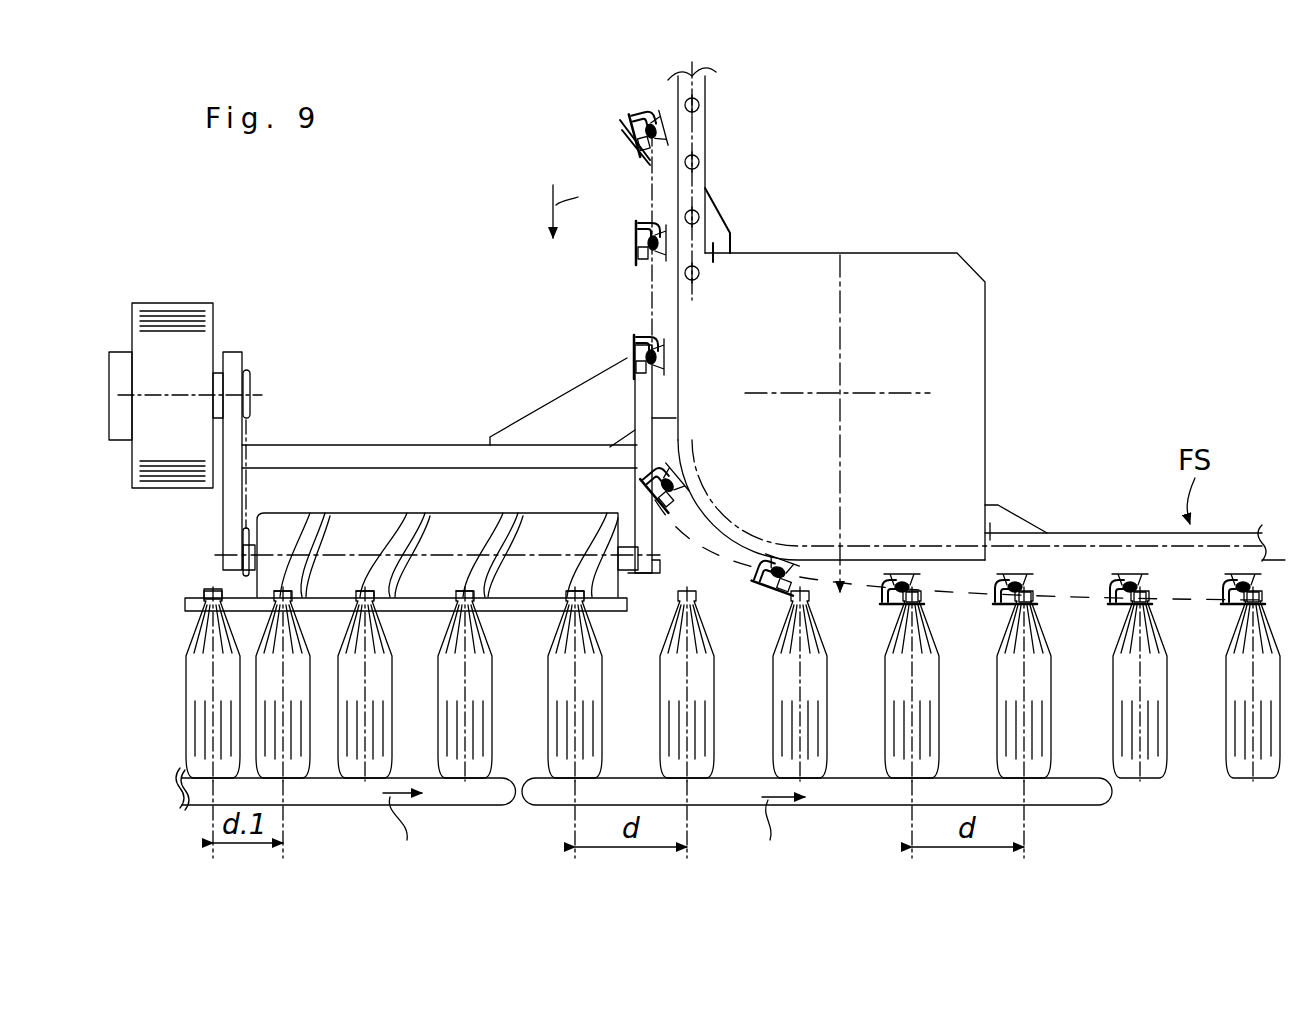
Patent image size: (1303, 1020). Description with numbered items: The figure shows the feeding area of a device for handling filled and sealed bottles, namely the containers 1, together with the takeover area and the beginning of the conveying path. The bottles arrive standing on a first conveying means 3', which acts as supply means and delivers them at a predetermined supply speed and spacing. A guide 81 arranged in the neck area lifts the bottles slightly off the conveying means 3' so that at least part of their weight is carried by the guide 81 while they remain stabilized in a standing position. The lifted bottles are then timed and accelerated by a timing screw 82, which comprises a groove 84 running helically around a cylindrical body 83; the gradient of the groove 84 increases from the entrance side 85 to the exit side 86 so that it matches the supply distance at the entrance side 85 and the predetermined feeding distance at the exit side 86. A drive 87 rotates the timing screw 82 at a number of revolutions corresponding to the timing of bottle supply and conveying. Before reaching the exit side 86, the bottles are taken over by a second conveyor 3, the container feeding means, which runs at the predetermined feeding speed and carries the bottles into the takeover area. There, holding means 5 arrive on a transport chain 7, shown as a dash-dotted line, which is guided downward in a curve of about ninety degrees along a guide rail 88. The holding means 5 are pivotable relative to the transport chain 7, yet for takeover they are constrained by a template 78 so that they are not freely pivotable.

The containers 1 is at (200, 677).
The second conveyor 3 is at (817, 828).
The first conveying means 3' is at (343, 823).
The holding means 5 is at (632, 148).
The transport chain 7 is at (688, 322).
The template 78 is at (648, 305).
The guide 81 is at (204, 597).
The timing screw 82 is at (368, 498).
The cylindrical body 83 is at (290, 526).
The groove 84 is at (420, 506).
The entrance side 85 is at (244, 583).
The exit side 86 is at (626, 590).
The drive 87 is at (163, 352).
The guide rail 88 is at (703, 180).